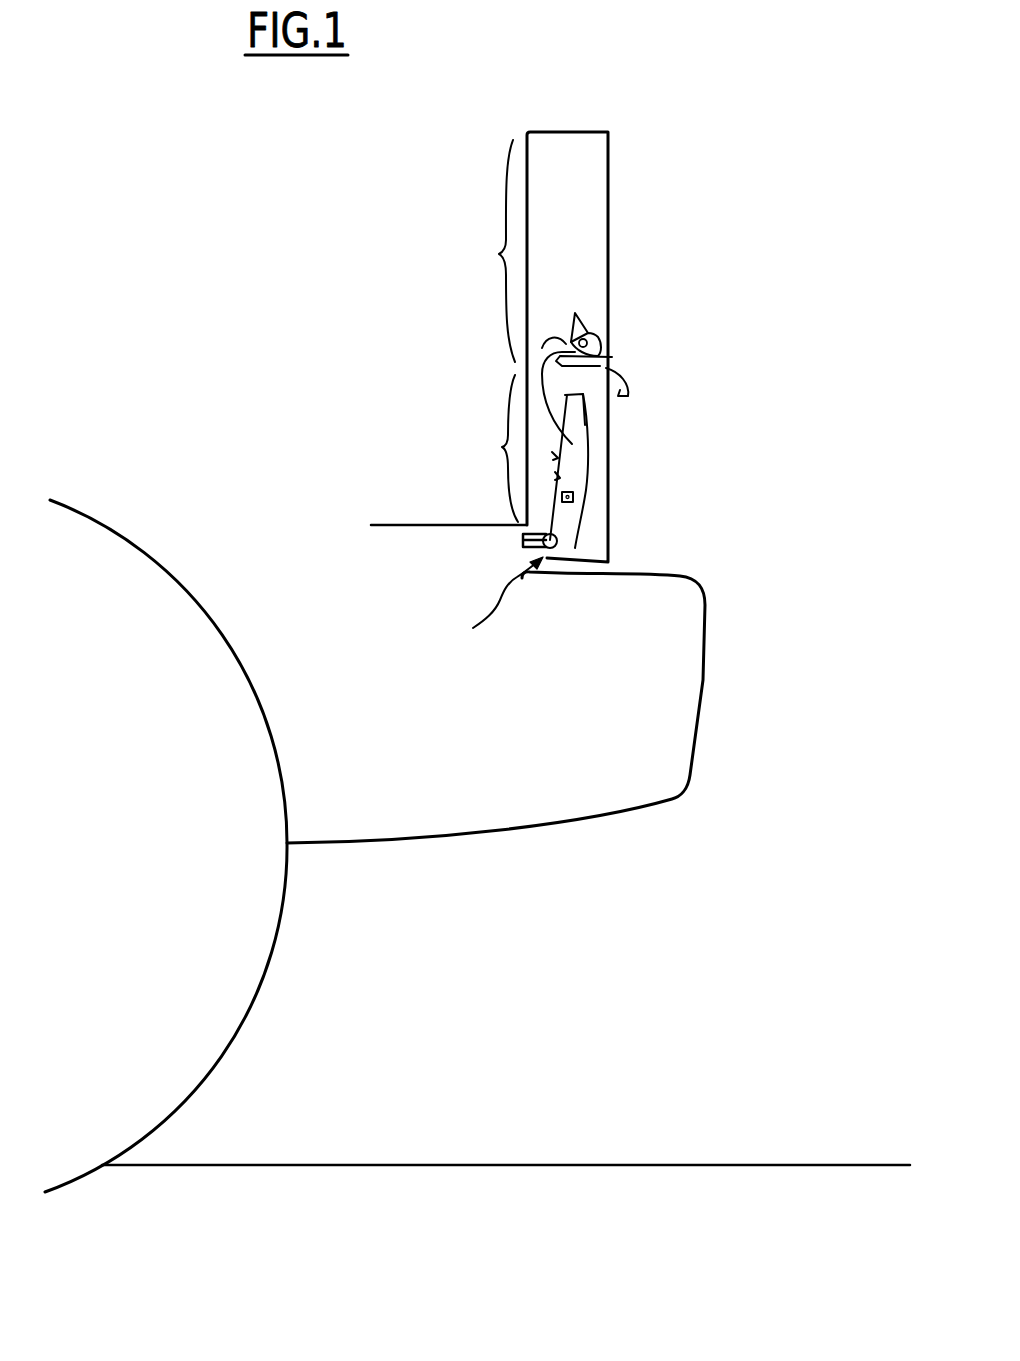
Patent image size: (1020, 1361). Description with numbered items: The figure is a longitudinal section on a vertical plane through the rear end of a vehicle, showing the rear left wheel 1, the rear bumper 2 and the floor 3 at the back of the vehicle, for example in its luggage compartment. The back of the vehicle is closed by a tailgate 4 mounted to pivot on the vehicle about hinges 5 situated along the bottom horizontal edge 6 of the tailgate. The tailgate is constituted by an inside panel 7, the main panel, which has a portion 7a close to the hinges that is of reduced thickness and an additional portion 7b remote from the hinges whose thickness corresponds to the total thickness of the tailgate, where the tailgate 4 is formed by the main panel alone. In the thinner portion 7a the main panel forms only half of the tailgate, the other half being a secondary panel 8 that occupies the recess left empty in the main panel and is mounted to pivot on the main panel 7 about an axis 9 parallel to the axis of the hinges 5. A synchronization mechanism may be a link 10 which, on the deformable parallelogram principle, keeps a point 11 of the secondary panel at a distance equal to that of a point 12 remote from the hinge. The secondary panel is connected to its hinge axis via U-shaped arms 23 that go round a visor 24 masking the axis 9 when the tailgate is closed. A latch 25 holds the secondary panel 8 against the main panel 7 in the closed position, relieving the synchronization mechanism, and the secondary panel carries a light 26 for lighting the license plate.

The rear left wheel 1 is at (232, 972).
The rear bumper 2 is at (703, 677).
The floor 3 is at (402, 524).
The tailgate 4 is at (585, 238).
The hinges 5 is at (495, 605).
The bottom horizontal edge 6 is at (612, 551).
The inside panel 7 is at (541, 438).
The portion of reduced thickness 7a is at (502, 447).
The additional portion 7b is at (497, 254).
The secondary panel 8 is at (612, 436).
The axis 9 is at (606, 338).
The link 10 is at (541, 438).
The point of the secondary panel 11 is at (588, 336).
The point 12 is at (522, 541).
The U-shaped arms 23 is at (638, 419).
The visor 24 is at (612, 348).
The latch 25 is at (575, 497).
The light 26 is at (628, 388).